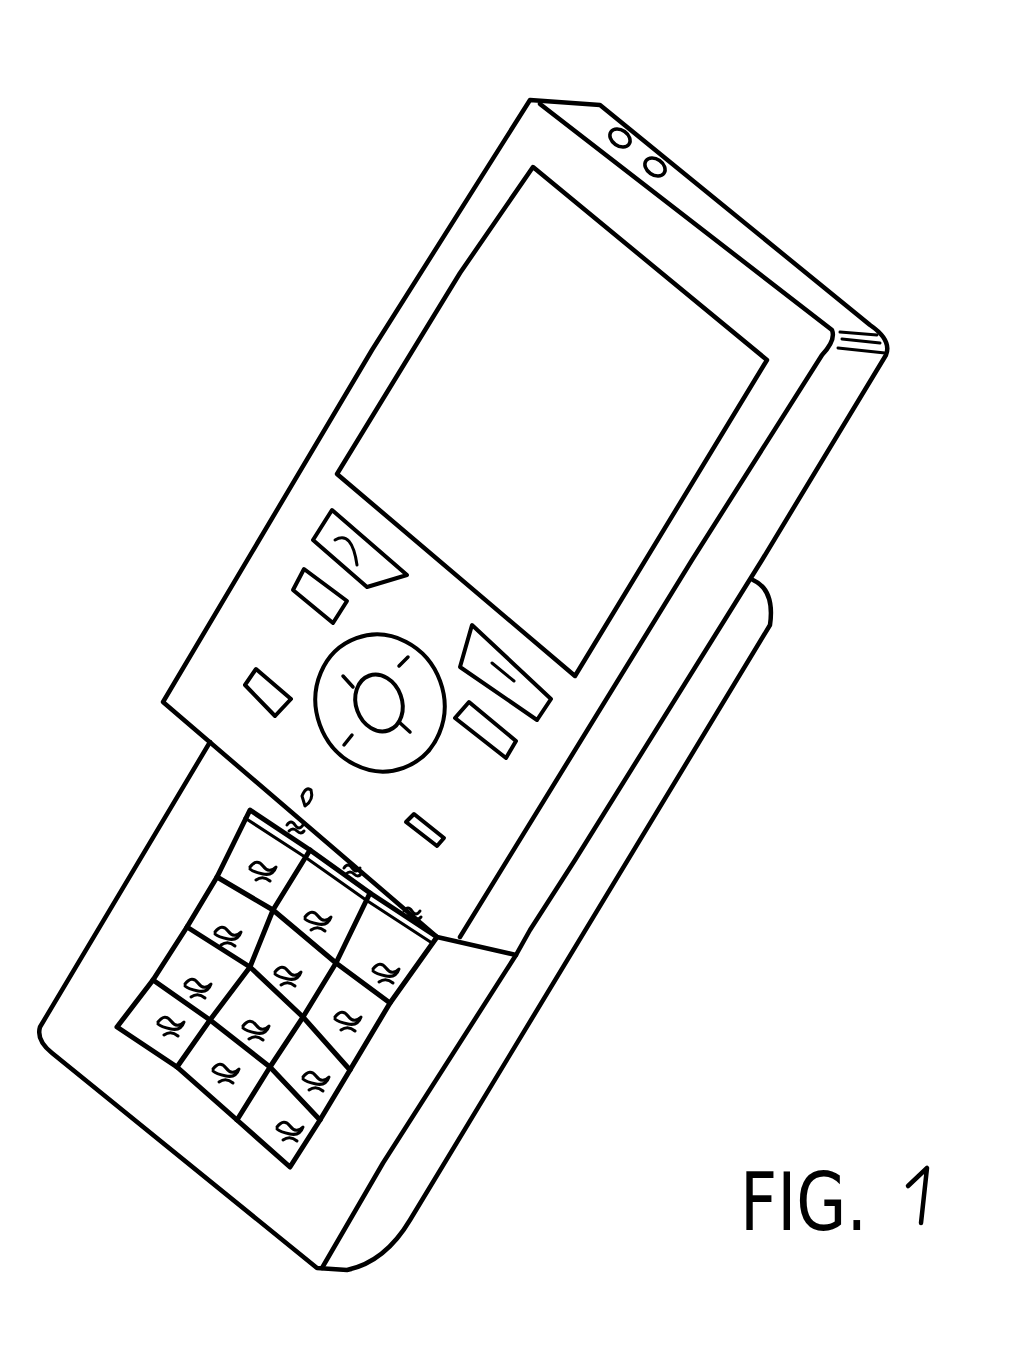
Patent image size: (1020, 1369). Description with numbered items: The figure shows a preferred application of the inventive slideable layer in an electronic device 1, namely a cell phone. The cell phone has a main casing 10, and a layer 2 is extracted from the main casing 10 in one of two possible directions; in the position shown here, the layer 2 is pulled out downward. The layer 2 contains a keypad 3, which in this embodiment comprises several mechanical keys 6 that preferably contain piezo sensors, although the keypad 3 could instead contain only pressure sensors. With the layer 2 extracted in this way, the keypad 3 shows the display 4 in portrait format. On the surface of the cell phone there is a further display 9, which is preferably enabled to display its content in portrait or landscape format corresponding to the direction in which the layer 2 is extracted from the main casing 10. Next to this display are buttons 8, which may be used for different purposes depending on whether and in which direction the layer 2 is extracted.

The electronic device 1 is at (471, 672).
The layer 2 is at (405, 961).
The keypad 3 is at (317, 1072).
The display 4 is at (216, 1068).
The mechanical keys 6 is at (390, 1003).
The buttons 8 is at (266, 644).
The display 9 is at (556, 422).
The main casing 10 is at (525, 527).